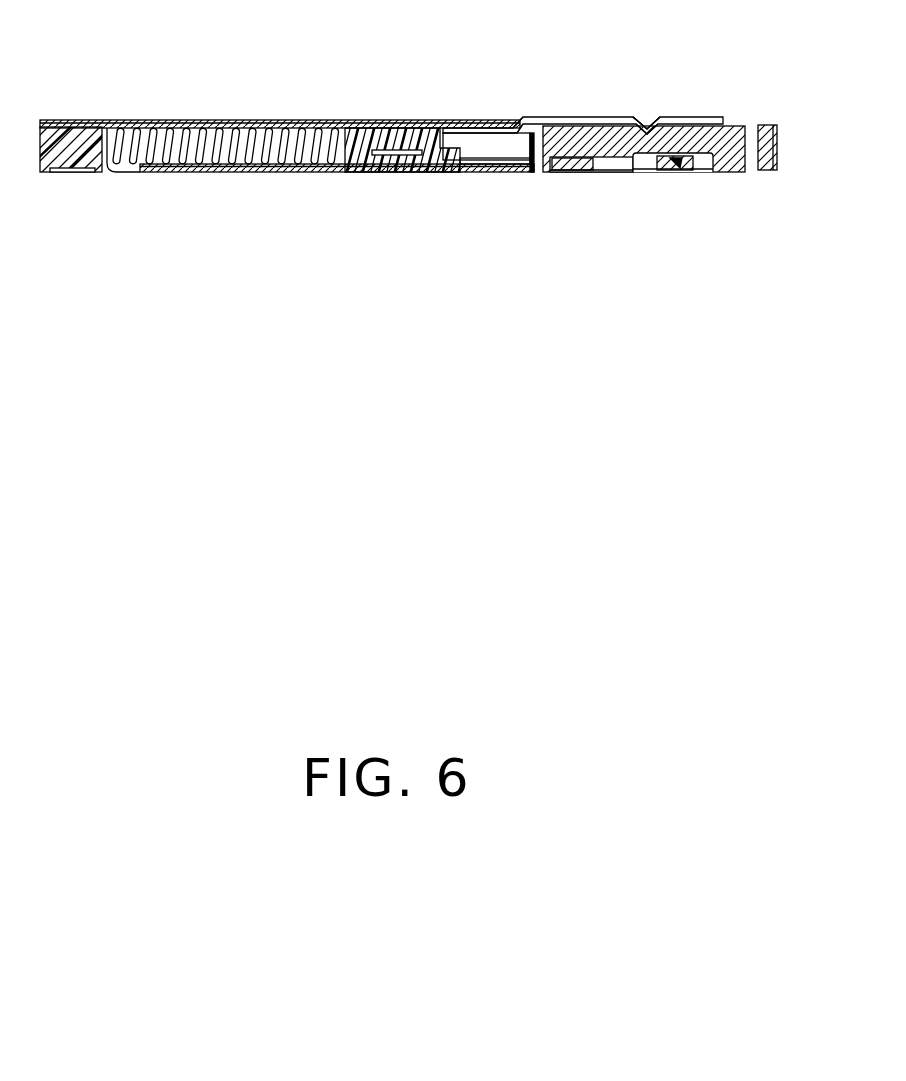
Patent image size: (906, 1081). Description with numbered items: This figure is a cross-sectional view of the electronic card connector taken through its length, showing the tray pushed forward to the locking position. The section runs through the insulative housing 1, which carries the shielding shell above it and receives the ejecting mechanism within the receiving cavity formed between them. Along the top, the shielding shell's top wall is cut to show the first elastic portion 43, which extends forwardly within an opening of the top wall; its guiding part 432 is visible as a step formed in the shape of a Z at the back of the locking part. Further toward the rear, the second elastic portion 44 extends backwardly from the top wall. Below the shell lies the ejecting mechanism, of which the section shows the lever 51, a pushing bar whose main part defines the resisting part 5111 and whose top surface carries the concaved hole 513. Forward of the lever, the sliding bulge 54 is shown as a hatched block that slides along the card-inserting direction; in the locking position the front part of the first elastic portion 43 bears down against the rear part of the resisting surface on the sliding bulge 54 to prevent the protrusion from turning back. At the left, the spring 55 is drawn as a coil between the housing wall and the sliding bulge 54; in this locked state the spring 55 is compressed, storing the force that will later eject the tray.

The insulative housing 1 is at (79, 150).
The first elastic portion 43 is at (463, 130).
The guiding part 432 is at (515, 126).
The second elastic portion 44 is at (648, 130).
The lever 51 is at (717, 143).
The concaved hole 513 is at (670, 122).
The resisting part 5111 is at (528, 134).
The sliding bulge 54 is at (377, 127).
The spring 55 is at (221, 129).